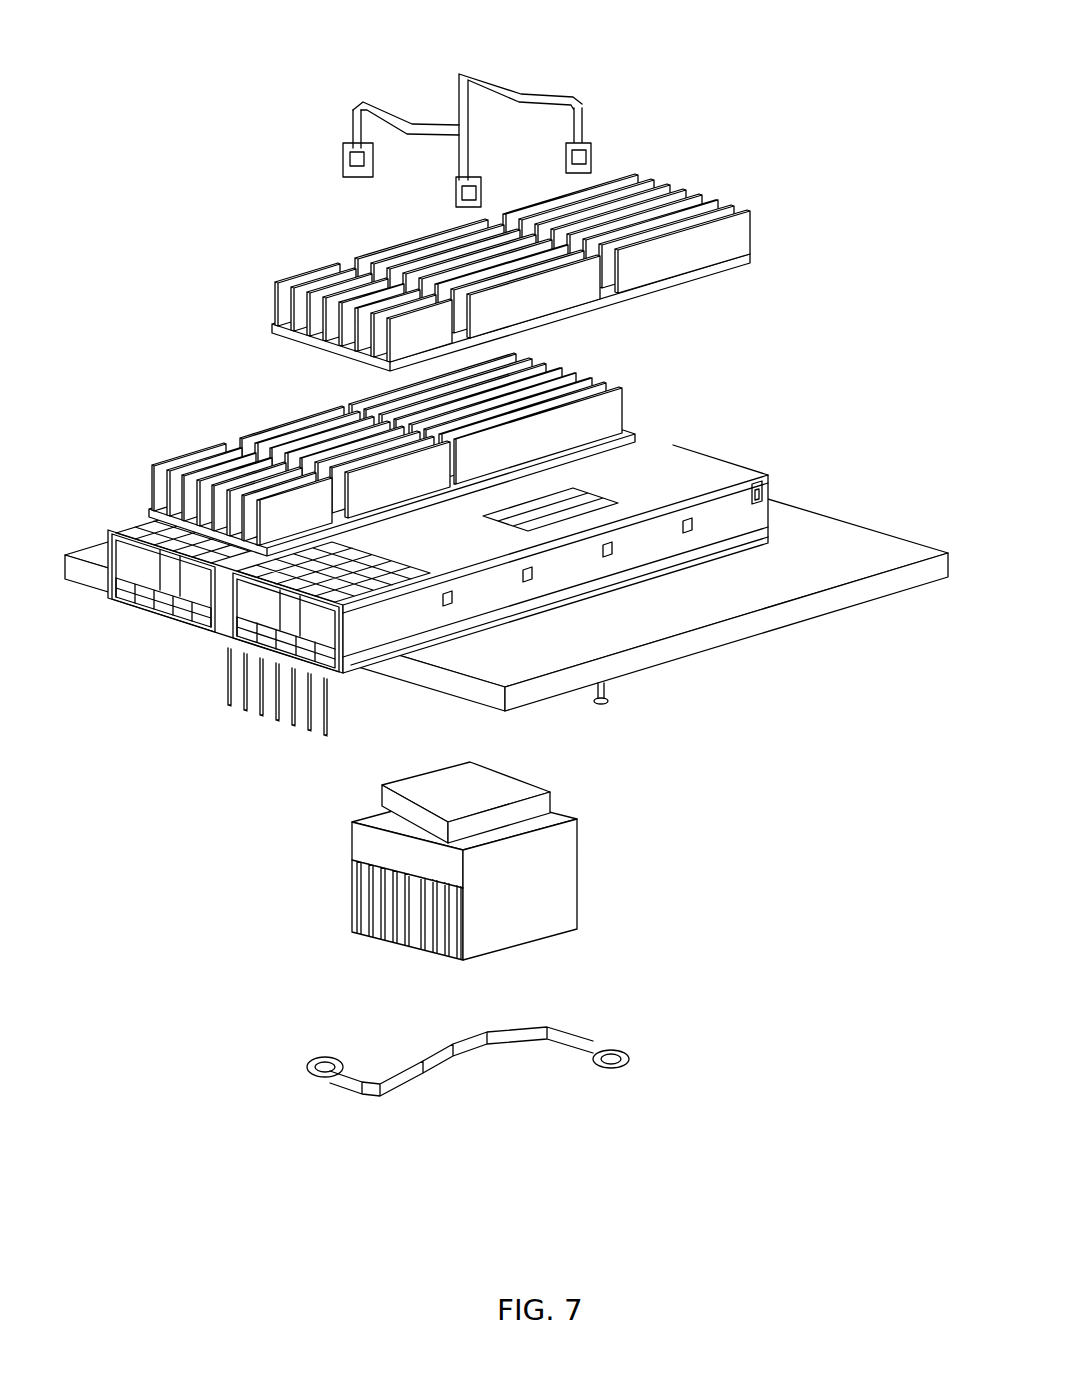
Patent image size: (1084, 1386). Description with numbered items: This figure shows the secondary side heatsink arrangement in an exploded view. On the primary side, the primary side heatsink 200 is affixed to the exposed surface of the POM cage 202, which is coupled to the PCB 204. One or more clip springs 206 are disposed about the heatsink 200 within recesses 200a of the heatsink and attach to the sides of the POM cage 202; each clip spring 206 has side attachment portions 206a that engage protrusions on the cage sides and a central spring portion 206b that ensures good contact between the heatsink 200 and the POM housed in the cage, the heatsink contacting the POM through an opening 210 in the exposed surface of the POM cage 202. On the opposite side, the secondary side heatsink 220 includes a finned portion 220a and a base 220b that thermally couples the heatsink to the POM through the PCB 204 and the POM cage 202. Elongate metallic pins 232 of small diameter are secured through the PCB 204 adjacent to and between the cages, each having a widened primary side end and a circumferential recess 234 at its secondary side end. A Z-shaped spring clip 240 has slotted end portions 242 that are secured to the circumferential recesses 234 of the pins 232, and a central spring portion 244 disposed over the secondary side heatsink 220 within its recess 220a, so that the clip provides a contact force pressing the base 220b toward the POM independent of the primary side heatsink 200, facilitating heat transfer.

The primary side heatsink 200 is at (519, 265).
The recesses of the heatsink 200a is at (357, 262).
The POM cage 202 is at (778, 470).
The PCB 204 is at (783, 636).
The clip spring 206 is at (452, 108).
The side attachment portions 206a is at (335, 152).
The central spring portion 206b is at (410, 113).
The opening 210 is at (392, 552).
The secondary side heatsink 220 is at (395, 835).
The finned portion 220a is at (342, 892).
The base 220b is at (368, 808).
The pins 232 is at (701, 775).
The circumferential recess 234 is at (612, 713).
The Z-shaped spring clip 240 is at (338, 1060).
The slotted end portions 242 is at (312, 1053).
The central spring portion 244 is at (434, 1050).